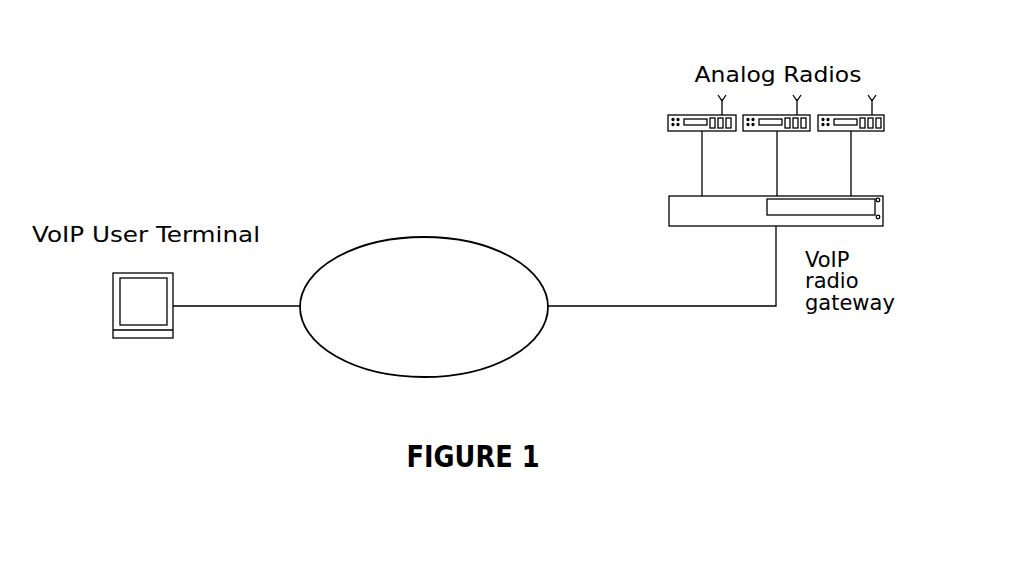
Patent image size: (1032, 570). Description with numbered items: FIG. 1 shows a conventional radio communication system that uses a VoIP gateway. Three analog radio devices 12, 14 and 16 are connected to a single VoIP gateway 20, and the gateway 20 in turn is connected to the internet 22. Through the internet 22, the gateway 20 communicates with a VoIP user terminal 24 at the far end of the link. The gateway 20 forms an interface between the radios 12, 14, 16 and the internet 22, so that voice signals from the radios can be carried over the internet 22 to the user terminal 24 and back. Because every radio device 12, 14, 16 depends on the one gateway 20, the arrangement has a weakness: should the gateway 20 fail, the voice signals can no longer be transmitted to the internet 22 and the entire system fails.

The radio device 12 is at (885, 118).
The radio device 14 is at (670, 116).
The radio device 16 is at (743, 132).
The VoIP gateway 20 is at (680, 213).
The internet 22 is at (408, 260).
The user terminal 24 is at (150, 317).